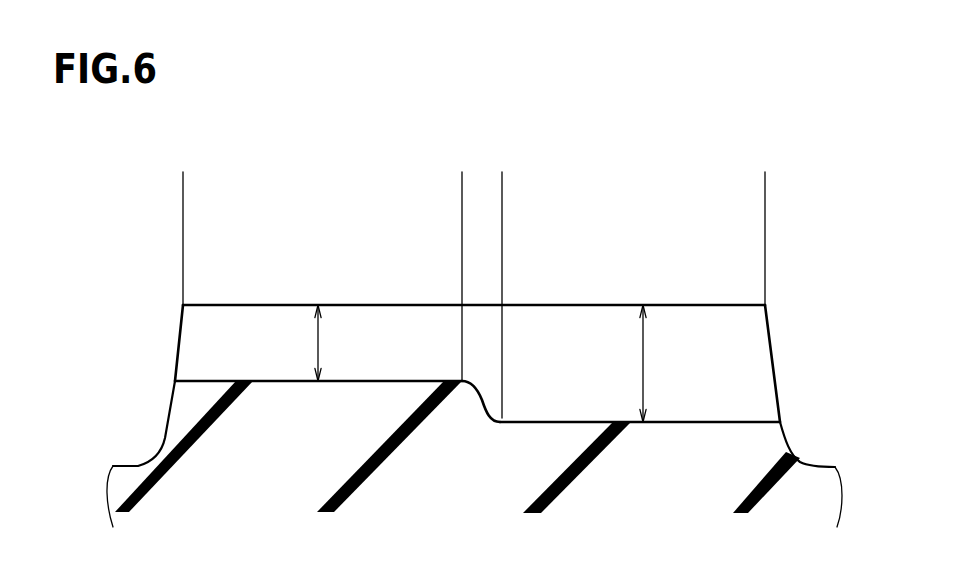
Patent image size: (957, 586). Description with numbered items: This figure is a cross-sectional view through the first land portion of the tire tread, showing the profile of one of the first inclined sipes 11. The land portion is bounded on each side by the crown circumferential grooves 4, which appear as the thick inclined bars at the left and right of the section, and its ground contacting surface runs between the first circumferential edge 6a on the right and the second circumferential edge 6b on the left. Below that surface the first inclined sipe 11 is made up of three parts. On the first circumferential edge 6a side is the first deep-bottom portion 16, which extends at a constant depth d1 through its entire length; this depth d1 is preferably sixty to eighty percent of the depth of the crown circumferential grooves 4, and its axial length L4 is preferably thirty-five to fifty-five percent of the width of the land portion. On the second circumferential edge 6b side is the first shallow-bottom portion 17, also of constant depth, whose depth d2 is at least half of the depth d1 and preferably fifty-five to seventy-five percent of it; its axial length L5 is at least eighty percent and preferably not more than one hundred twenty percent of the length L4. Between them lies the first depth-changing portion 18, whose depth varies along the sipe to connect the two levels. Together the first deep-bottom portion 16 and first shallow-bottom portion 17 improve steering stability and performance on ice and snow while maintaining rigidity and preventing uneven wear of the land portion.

The crown circumferential groove 4 is at (137, 450).
The first circumferential edge 6a is at (768, 303).
The second circumferential edge 6b is at (182, 303).
The first inclined sipe 11 is at (275, 303).
The first deep-bottom portion 16 is at (557, 408).
The first shallow-bottom portion 17 is at (393, 373).
The first depth-changing portion 18 is at (482, 355).
The depth of the first deep-bottom portion d1 is at (643, 362).
The depth of the first shallow-bottom portion d2 is at (318, 342).
The length of the first deep-bottom portion L4 is at (765, 178).
The length of the first shallow-bottom portion L5 is at (462, 178).